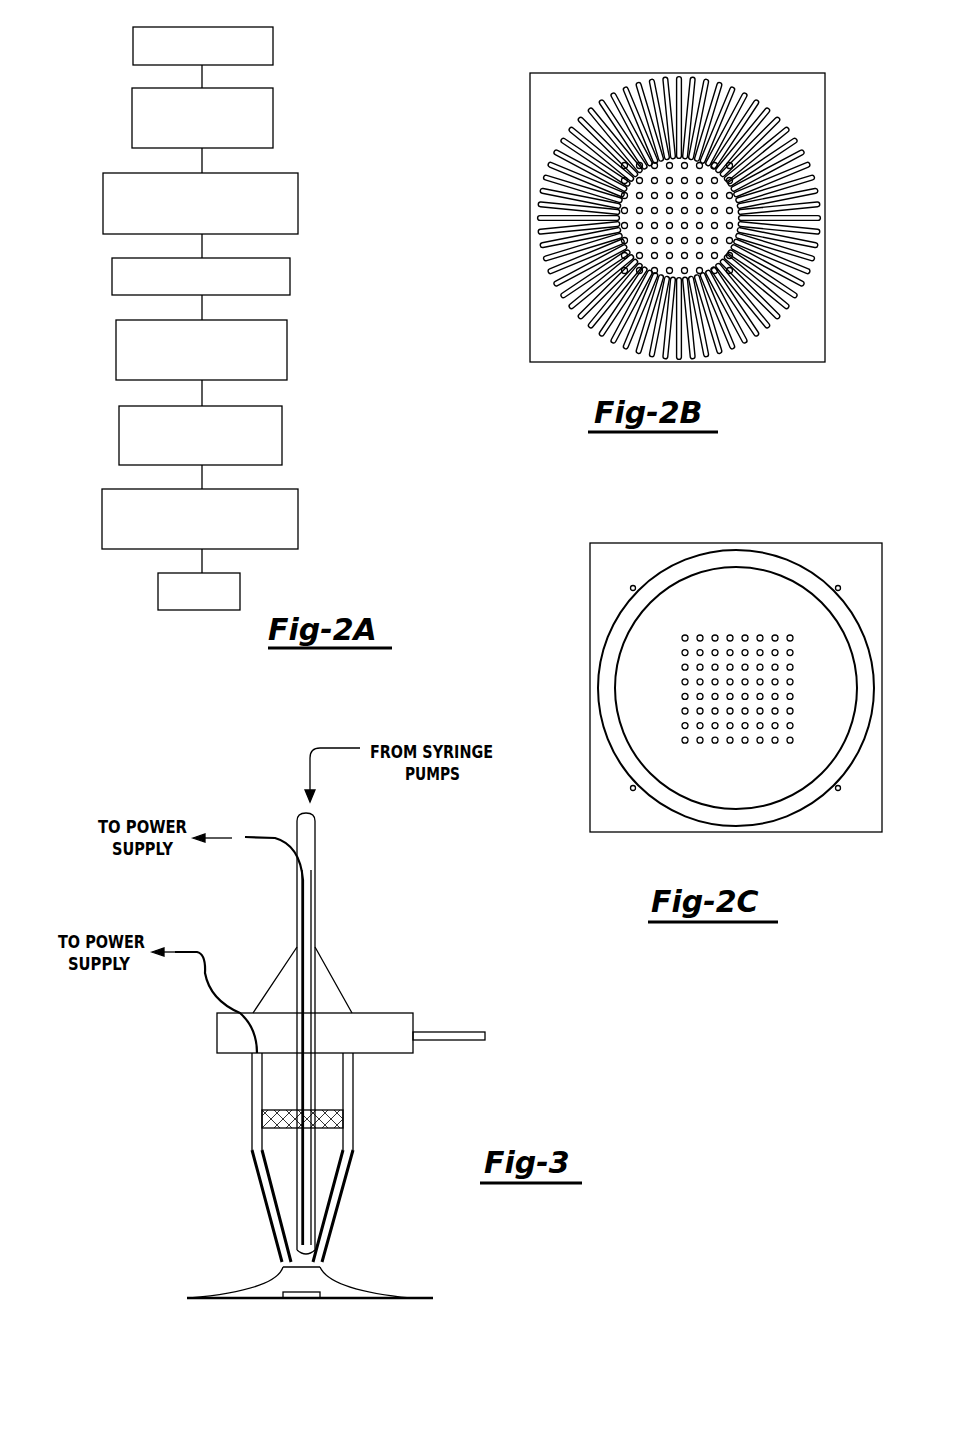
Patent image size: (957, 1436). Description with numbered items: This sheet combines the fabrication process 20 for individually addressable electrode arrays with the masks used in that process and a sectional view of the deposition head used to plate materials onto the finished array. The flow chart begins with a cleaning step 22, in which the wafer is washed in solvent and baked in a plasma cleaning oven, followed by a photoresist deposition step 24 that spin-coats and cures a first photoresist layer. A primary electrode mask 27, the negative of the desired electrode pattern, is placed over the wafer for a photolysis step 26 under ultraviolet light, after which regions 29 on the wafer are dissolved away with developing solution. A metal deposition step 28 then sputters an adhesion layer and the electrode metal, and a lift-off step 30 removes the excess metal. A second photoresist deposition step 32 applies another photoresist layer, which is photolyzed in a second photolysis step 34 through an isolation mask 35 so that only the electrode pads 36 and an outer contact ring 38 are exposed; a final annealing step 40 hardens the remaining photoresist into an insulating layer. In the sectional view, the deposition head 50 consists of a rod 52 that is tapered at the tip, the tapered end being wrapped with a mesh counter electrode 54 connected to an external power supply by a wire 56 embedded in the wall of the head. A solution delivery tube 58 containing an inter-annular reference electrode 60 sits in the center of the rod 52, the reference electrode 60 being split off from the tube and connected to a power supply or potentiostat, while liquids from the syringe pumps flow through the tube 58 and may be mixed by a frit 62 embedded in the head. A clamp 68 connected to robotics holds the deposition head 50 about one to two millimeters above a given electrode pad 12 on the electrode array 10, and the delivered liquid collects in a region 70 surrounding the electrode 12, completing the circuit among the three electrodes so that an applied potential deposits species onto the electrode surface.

In FIG. 2A, the fabrication process flowchart 20 is at (340, 80).
In FIG. 2A, the cleaning step 22 is at (133, 46).
In FIG. 2A, the photoresist deposition step 24 is at (132, 126).
In FIG. 2A, the photolysis step 26 is at (103, 190).
In FIG. 2A, the metal deposition step 28 is at (112, 277).
In FIG. 2A, the lift-off step 30 is at (116, 353).
In FIG. 2A, the second photoresist deposition step 32 is at (119, 436).
In FIG. 2A, the second photolysis step 34 is at (102, 520).
In FIG. 2A, the annealing step 40 is at (158, 596).
In FIG. 2B, the primary electrode mask 27 is at (788, 90).
In FIG. 2B, the regions 29 is at (805, 185).
In FIG. 2C, the isolation mask 35 is at (834, 548).
In FIG. 2C, the outer contact ring 38 is at (612, 626).
In FIG. 2C, the electrode pads 36 is at (620, 690).
In FIG. 3, the deposition head 50 is at (84, 813).
In FIG. 3, the solution delivery tube 58 is at (305, 842).
In FIG. 3, the inter-annular reference electrode 60 is at (310, 893).
In FIG. 3, the clamp 68 is at (382, 1027).
In FIG. 3, the wire 56 is at (215, 993).
In FIG. 3, the rod 52 is at (332, 1150).
In FIG. 3, the frit 62 is at (333, 1110).
In FIG. 3, the mesh counter electrode 54 is at (347, 1202).
In FIG. 3, the region 70 is at (333, 1285).
In FIG. 3, the electrode array 10 is at (237, 1303).
In FIG. 3, the electrode pad 12 is at (318, 1303).